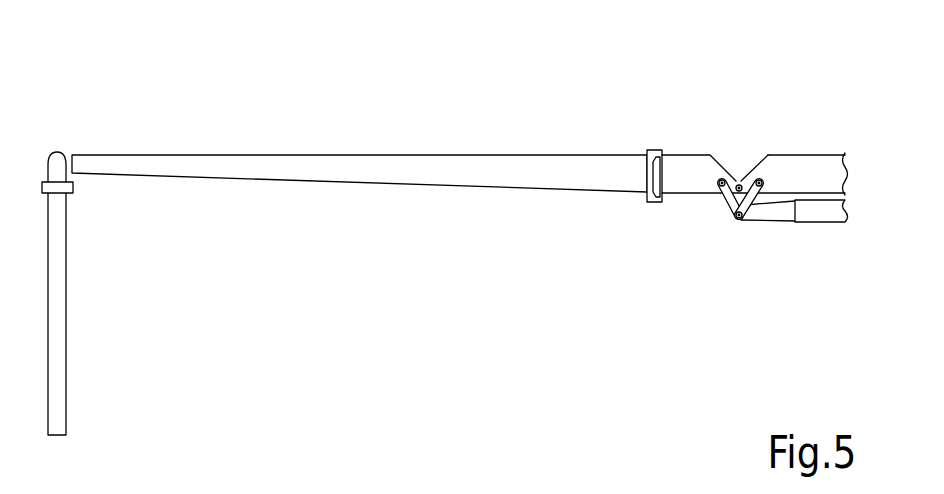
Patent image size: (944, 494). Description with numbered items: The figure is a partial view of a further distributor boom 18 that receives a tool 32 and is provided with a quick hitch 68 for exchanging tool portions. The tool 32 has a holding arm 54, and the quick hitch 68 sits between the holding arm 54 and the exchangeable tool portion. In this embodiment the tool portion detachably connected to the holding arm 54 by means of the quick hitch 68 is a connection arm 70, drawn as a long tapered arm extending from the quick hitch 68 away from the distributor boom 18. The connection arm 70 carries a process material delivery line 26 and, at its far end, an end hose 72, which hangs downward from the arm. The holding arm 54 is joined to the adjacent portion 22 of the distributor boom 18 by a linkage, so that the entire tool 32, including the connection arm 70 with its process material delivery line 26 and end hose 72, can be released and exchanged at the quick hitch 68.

The tool 32 is at (740, 63).
The process material delivery line 26 is at (55, 151).
The connection arm 70 is at (358, 154).
The quick hitch 68 is at (654, 149).
The holding arm 54 is at (692, 154).
The distributor boom 18 is at (785, 115).
The carrier tube 22 is at (826, 154).
The end hose 72 is at (66, 313).